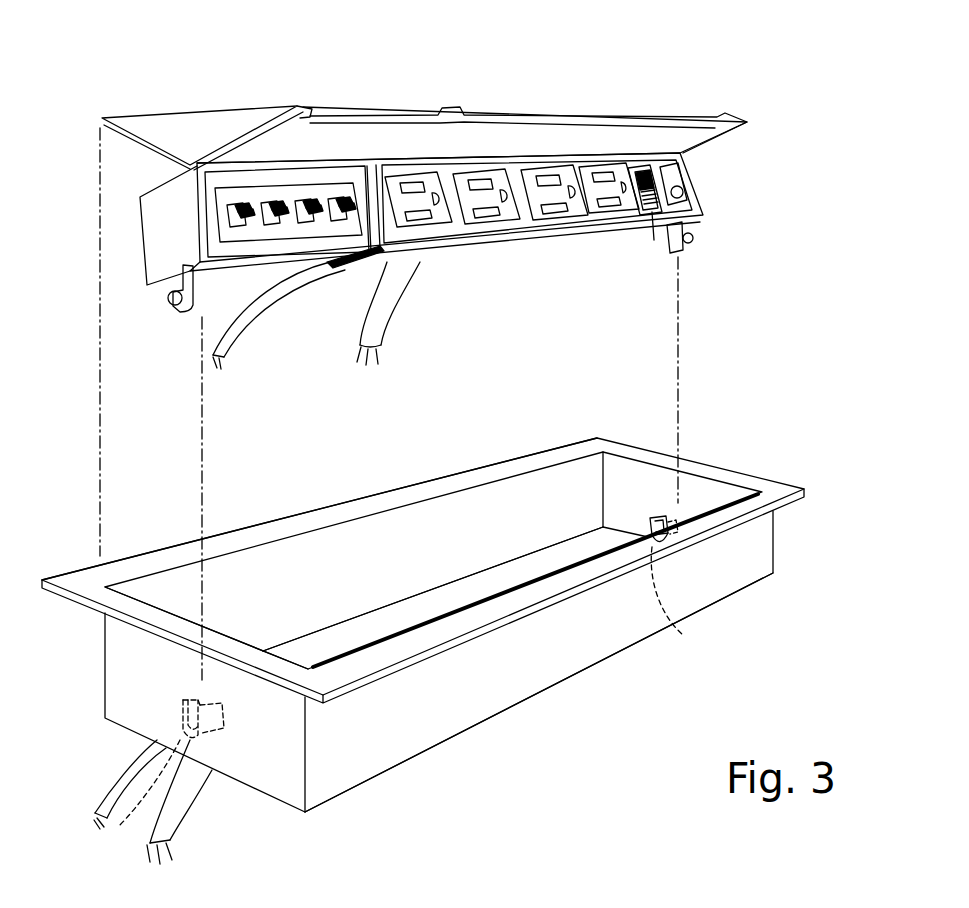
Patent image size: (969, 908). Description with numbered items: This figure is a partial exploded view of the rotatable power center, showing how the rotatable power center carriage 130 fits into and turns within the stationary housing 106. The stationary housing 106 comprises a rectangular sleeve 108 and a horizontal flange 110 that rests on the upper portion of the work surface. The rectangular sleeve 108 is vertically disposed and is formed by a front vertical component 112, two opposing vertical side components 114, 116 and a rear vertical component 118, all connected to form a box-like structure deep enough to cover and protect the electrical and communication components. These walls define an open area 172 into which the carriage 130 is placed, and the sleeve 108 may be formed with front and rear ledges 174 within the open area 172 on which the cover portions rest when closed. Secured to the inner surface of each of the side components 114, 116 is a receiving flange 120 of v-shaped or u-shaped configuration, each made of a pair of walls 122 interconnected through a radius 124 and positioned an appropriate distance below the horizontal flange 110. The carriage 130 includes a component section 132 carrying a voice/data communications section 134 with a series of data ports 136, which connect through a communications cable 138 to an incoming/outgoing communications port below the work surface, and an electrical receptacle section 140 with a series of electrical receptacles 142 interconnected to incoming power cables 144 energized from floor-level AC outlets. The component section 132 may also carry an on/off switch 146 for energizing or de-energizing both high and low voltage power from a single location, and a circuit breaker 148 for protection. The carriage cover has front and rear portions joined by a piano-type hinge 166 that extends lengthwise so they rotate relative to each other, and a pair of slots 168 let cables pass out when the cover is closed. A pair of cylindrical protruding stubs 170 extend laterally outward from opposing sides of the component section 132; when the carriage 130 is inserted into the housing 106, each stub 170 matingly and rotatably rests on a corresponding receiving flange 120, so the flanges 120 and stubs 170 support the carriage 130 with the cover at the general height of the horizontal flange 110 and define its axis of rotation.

The stationary housing 106 is at (732, 441).
The rectangular sleeve 108 is at (607, 665).
The horizontal flange 110 is at (263, 530).
The front vertical component 112 is at (355, 770).
The vertical side component 114 is at (282, 780).
The vertical side component 116 is at (640, 480).
The rear vertical component 118 is at (335, 565).
The receiving flange 120 is at (690, 489).
The wall 122 is at (648, 527).
The radius 124 is at (410, 703).
The power center carriage 130 is at (770, 180).
The component section 132 is at (715, 222).
The voice/data communications section 134 is at (278, 290).
The data port 136 is at (300, 200).
The communications cable 138 is at (226, 340).
The electrical receptacle section 140 is at (498, 282).
The electrical receptacle 142 is at (627, 212).
The incoming power cable 144 is at (423, 265).
The on/off switch 146 is at (652, 240).
The circuit breaker 148 is at (680, 190).
The piano-type hinge 166 is at (193, 163).
The slot 168 is at (302, 107).
The protruding stub 170 is at (170, 310).
The open area 172 is at (462, 532).
The ledge 174 is at (187, 573).